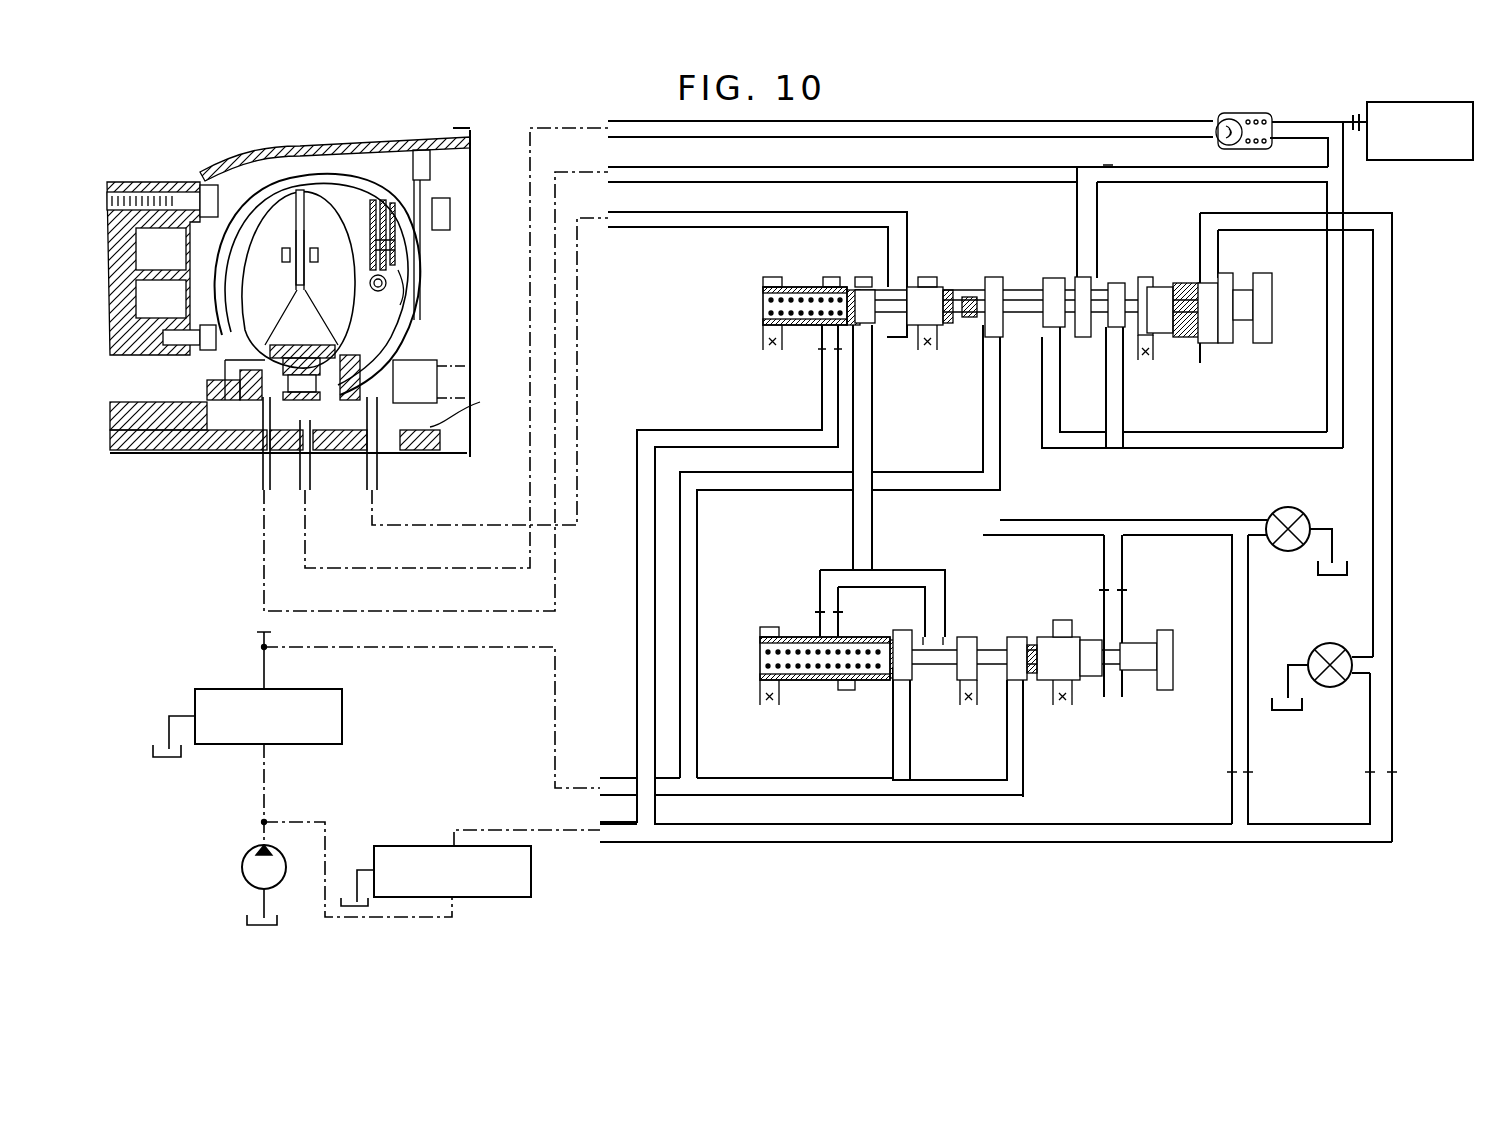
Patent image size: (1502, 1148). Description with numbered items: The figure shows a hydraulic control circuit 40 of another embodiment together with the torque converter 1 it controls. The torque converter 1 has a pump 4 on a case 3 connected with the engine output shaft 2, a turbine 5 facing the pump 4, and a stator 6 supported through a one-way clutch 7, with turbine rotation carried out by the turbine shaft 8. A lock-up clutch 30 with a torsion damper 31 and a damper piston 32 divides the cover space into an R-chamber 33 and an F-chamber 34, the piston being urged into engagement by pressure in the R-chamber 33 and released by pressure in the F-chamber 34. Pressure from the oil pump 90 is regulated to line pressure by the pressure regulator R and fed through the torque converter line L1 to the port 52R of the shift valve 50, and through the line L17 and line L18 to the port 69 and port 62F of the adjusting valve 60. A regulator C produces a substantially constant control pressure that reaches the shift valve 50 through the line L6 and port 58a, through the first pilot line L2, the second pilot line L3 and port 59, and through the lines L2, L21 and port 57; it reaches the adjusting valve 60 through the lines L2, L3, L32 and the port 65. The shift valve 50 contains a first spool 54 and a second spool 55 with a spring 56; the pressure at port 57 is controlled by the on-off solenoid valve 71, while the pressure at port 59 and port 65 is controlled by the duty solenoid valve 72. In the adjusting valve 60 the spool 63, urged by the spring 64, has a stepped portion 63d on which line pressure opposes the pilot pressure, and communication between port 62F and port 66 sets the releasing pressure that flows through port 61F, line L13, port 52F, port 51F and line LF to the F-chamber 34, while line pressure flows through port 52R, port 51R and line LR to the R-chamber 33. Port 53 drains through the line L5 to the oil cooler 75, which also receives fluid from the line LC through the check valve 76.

The torque converter 1 is at (230, 125).
The engine output shaft 2 is at (302, 292).
The case 3 is at (272, 186).
The pump 4 is at (263, 216).
The turbine 5 is at (304, 190).
The stator 6 is at (290, 305).
The one-way clutch 7 is at (297, 353).
The turbine shaft 8 is at (357, 440).
The lock-up clutch 30 is at (422, 192).
The torsion damper 31 is at (386, 256).
The damper piston 32 is at (400, 232).
The R-chamber 33 is at (350, 190).
The F-chamber 34 is at (405, 300).
The hydraulic control circuit 40 is at (945, 107).
The shift valve 50 is at (973, 263).
The port 51F is at (893, 285).
The port 51R is at (1085, 285).
The port 52F is at (875, 330).
The port 52R is at (1118, 332).
The port 53 is at (1050, 330).
The first spool 54 is at (1098, 330).
The second spool 55 is at (921, 287).
The spring 56 is at (763, 302).
The port 57 is at (1210, 286).
The port 58a is at (832, 325).
The port 59 is at (978, 326).
The adjusting valve 60 is at (994, 622).
The port 61F is at (830, 637).
The port 62F is at (900, 684).
The spool 63 is at (1062, 640).
The stepped portion 63d is at (1034, 688).
The spring 64 is at (762, 655).
The port 65 is at (1106, 641).
The port 66 is at (930, 605).
The port 69 is at (1012, 684).
The on-off solenoid valve 71 is at (1327, 688).
The duty solenoid valve 72 is at (1282, 552).
The oil cooler 75 is at (1437, 160).
The check valve 76 is at (1246, 118).
The oil pump 90 is at (242, 870).
The pressure regulator R is at (298, 690).
The regulator C is at (507, 905).
The torque converter line L1 is at (1018, 472).
The first pilot line L2 is at (1150, 824).
The second pilot line L3 is at (1183, 520).
The line L5 is at (1218, 432).
The line L6 is at (690, 428).
The line L13 is at (873, 438).
The line L17 is at (1024, 760).
The line L18 is at (893, 723).
The line L21 is at (1392, 315).
The line L32 is at (1120, 563).
The line LC is at (320, 535).
The line LF is at (380, 500).
The line LR is at (258, 525).